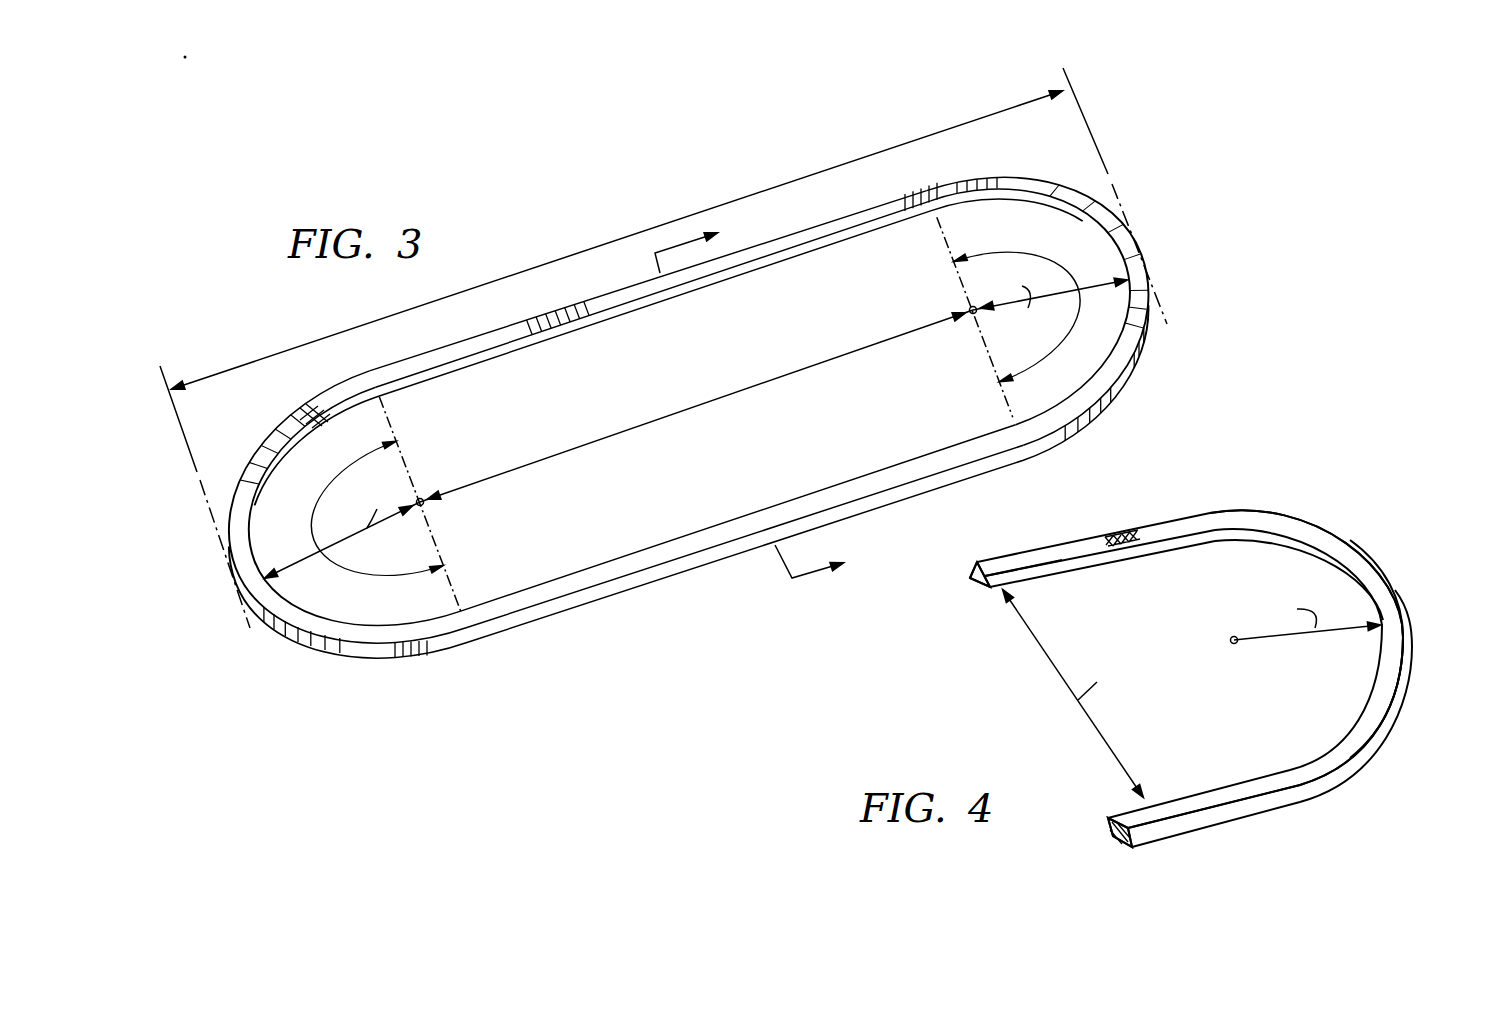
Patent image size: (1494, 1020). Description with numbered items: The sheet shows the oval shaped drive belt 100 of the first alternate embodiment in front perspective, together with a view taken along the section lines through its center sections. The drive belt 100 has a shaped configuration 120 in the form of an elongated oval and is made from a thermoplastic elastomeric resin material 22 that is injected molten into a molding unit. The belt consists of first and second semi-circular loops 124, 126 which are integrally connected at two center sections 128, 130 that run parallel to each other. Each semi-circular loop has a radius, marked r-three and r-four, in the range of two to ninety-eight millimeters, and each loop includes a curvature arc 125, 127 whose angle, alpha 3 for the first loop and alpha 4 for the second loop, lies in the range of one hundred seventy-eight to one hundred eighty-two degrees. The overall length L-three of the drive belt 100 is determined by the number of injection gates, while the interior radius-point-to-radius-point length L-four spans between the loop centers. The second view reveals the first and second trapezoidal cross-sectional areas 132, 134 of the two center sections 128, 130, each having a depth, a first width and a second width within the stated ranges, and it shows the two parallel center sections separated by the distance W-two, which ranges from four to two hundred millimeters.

In FIG. 3, the oval shaped drive belt 100 is at (963, 178).
In FIG. 4, the oval shaped drive belt 100 is at (1398, 580).
In FIG. 3, the shaped configuration 120 is at (372, 360).
In FIG. 4, the shaped configuration 120 is at (1232, 512).
In FIG. 3, the thermoplastic elastomeric resin material 22 is at (305, 415).
In FIG. 4, the thermoplastic elastomeric resin material 22 is at (1122, 533).
In FIG. 3, the first semi-circular loop 124 is at (240, 558).
In FIG. 3, the curvature arc 125 is at (308, 534).
In FIG. 3, the second semi-circular loop 126 is at (1147, 290).
In FIG. 4, the second semi-circular loop 126 is at (1363, 553).
In FIG. 3, the curvature arc 127 is at (1067, 343).
In FIG. 3, the center section 128 is at (598, 296).
In FIG. 4, the center section 128 is at (1062, 545).
In FIG. 3, the center section 130 is at (763, 540).
In FIG. 4, the center section 130 is at (1330, 755).
In FIG. 4, the first trapezoidal cross-sectional area 132 is at (966, 585).
In FIG. 4, the second trapezoidal cross-sectional area 134 is at (1107, 840).
In FIG. 3, the angle alpha 3 is at (365, 454).
In FIG. 3, the angle alpha 4 is at (982, 262).